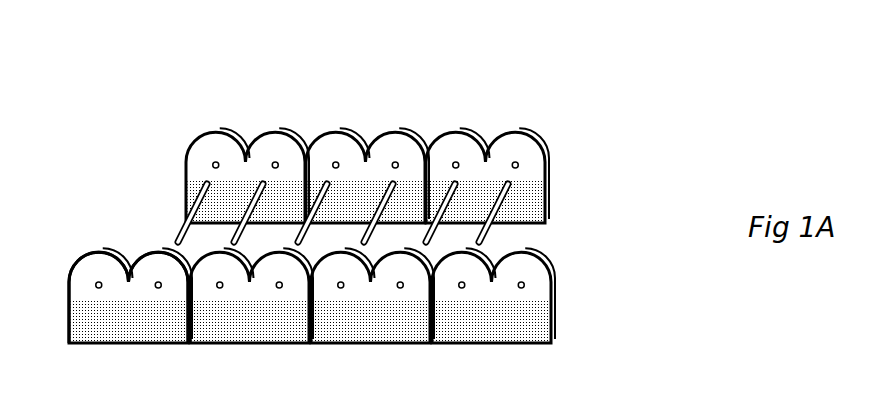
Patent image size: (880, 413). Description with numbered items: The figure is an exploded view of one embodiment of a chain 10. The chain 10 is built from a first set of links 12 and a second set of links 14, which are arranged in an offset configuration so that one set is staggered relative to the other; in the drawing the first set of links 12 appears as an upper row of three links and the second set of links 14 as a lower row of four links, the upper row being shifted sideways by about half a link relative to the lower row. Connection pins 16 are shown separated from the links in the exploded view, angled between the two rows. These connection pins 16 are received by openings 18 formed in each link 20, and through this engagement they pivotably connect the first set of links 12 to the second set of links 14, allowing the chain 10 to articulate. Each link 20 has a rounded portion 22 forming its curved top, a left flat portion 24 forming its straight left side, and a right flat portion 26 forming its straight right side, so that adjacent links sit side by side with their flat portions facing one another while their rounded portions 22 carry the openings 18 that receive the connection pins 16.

The chain 10 is at (328, 197).
The first set of links 12 is at (592, 173).
The second set of links 14 is at (325, 289).
The connection pins 16 is at (186, 220).
The openings 18 is at (157, 279).
The link 20 is at (93, 333).
The rounded portion 22 is at (98, 256).
The left flat portion 24 is at (72, 295).
The right flat portion 26 is at (188, 327).